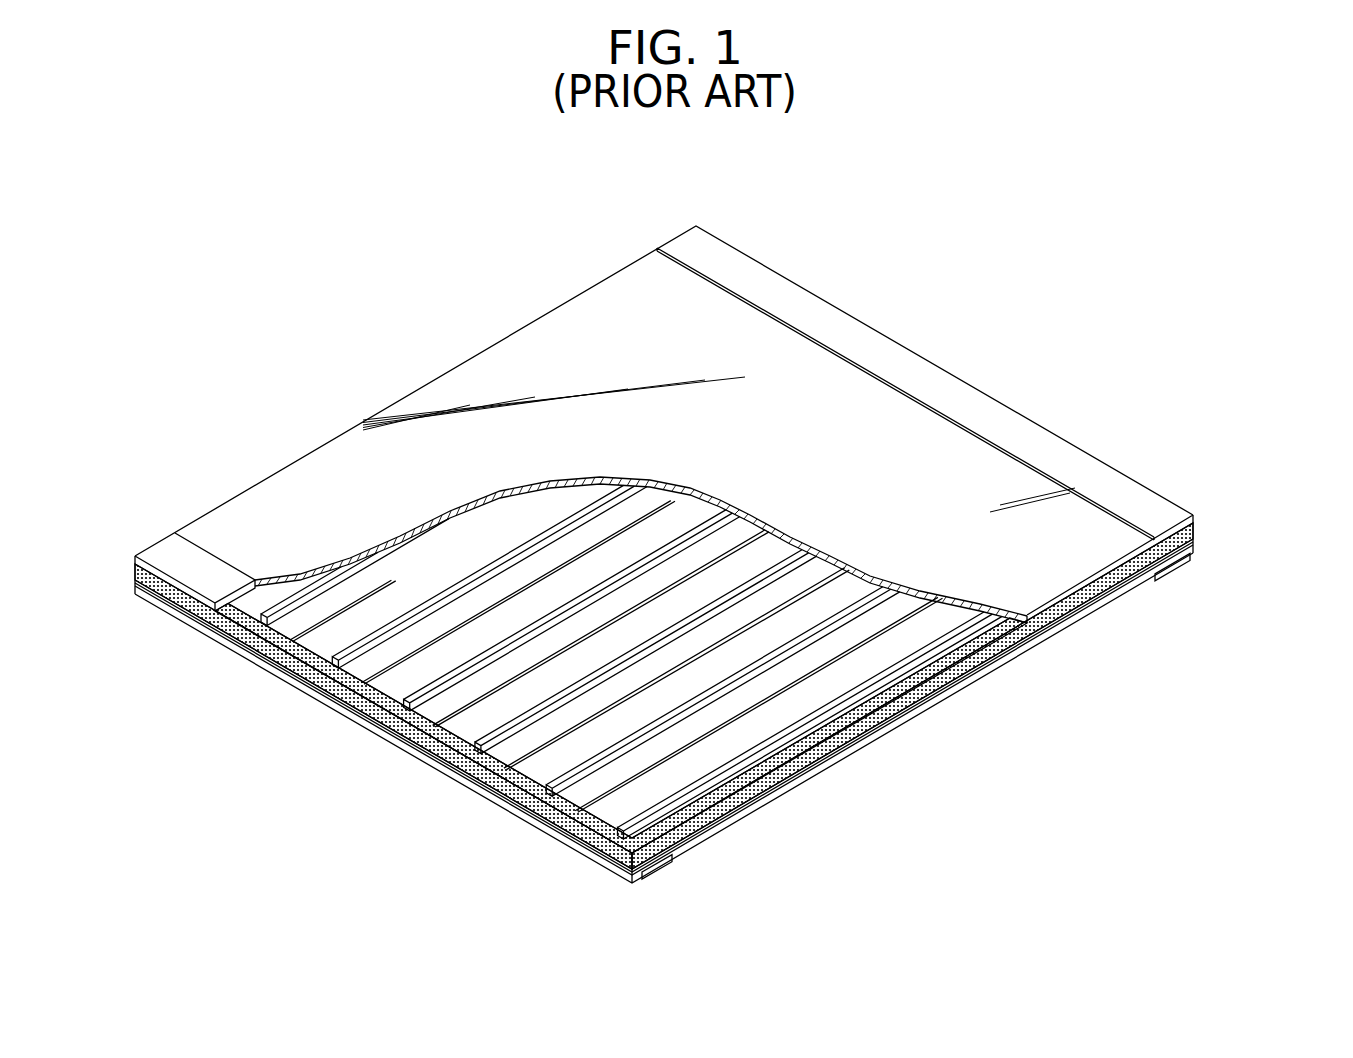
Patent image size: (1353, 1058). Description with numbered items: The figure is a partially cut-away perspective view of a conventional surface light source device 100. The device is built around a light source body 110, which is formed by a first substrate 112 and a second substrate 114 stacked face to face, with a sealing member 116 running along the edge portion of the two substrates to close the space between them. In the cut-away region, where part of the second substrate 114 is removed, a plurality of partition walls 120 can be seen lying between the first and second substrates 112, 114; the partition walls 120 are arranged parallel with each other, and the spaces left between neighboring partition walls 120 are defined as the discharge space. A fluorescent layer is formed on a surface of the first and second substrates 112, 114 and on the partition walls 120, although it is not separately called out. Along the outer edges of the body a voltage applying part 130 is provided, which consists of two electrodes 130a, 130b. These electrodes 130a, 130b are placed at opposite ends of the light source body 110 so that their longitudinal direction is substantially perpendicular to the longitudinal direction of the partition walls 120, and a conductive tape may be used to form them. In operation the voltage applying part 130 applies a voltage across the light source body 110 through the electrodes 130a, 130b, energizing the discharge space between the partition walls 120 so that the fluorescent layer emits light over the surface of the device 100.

The surface light source device 100 is at (985, 322).
The light source body 110 is at (1027, 734).
The first substrate 112 is at (882, 725).
The second substrate 114 is at (1014, 596).
The sealing member 116 is at (832, 748).
The partition walls 120 is at (718, 770).
The voltage applying part 130 is at (1160, 522).
The electrode 130a is at (655, 868).
The electrode 130b is at (1196, 556).